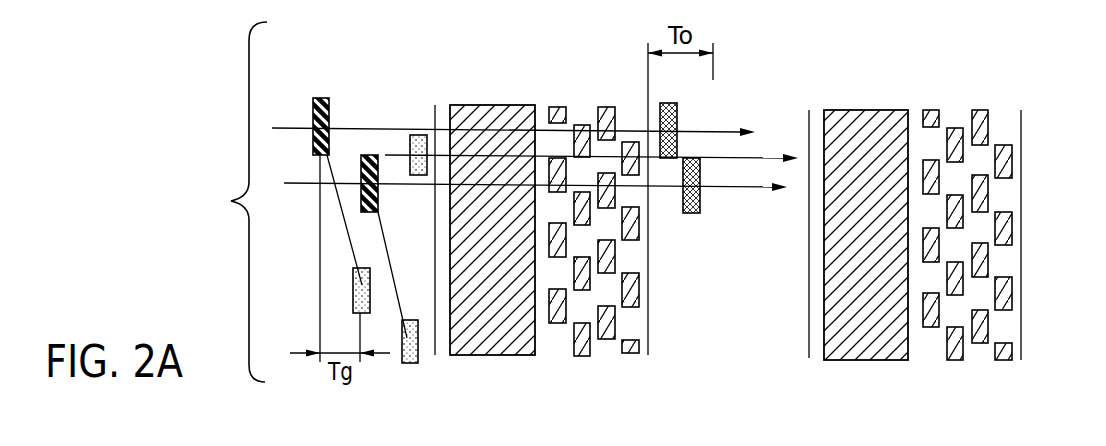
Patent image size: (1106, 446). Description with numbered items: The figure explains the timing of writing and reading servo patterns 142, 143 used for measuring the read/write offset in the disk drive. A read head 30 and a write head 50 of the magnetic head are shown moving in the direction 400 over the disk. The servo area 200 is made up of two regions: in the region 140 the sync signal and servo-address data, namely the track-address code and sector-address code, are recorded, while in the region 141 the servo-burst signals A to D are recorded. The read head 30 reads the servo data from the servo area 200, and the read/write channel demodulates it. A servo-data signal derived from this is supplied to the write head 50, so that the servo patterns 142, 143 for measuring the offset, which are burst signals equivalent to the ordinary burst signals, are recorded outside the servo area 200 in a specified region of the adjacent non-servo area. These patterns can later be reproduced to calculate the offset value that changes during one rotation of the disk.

The read head 30 is at (418, 135).
The write head 50 is at (323, 97).
The direction in which the magnetic head moves 400 is at (353, 127).
The region 140 is at (535, 67).
The region 141 is at (645, 67).
The servo pattern for measuring the offset 142 is at (677, 115).
The servo pattern for measuring the offset 143 is at (700, 200).
The servo area 200 is at (958, 100).